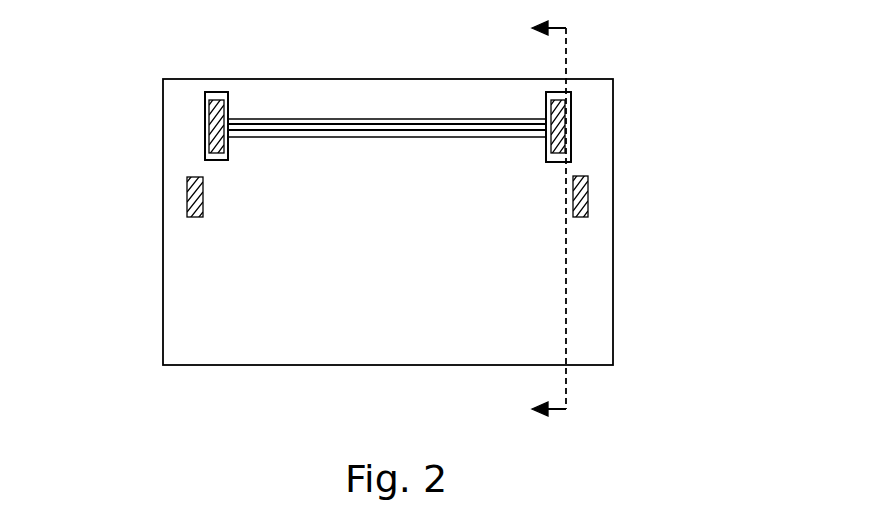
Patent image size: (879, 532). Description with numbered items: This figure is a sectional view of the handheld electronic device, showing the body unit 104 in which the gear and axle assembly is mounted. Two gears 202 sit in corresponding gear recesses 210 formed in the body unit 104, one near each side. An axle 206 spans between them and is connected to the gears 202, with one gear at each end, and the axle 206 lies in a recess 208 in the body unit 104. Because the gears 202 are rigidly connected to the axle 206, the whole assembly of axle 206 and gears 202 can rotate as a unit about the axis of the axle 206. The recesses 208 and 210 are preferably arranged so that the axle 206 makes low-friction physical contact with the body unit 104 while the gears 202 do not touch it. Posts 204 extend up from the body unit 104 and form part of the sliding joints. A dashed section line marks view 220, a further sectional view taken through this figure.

The body unit 104 is at (178, 320).
The gears 202 is at (214, 105).
The posts 204 is at (187, 205).
The axle 206 is at (353, 125).
The recess 208 is at (450, 118).
The gear recesses 210 is at (205, 135).
The view 220 is at (566, 283).